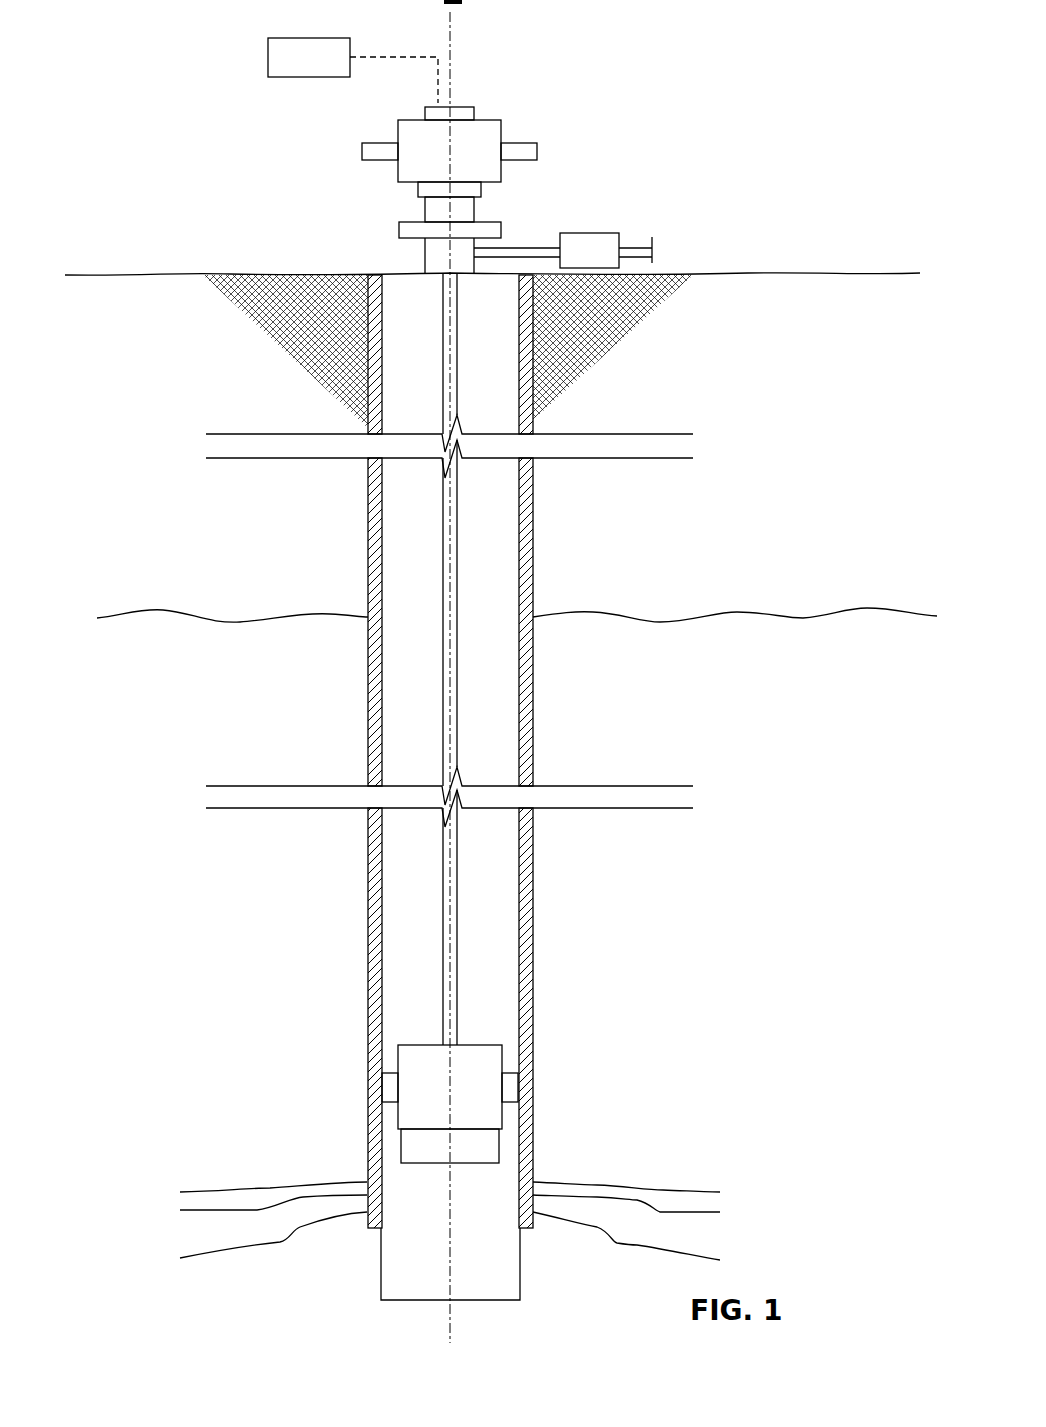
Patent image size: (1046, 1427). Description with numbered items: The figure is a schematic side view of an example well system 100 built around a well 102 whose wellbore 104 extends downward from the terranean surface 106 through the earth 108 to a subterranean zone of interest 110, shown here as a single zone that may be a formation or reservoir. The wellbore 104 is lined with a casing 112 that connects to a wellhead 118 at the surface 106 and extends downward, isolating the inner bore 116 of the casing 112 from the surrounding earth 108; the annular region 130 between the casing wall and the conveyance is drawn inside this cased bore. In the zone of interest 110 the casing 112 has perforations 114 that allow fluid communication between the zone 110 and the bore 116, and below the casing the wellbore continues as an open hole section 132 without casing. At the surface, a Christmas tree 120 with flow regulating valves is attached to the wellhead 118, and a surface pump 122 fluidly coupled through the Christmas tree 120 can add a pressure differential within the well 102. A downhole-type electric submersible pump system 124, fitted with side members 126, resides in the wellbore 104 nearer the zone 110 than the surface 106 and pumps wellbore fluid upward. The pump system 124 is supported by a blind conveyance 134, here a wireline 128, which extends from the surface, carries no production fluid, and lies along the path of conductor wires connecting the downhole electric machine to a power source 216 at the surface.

The well system 100 is at (688, 60).
The well 102 is at (610, 338).
The wellbore 104 is at (497, 480).
The terranean surface 106 is at (748, 273).
The earth 108 is at (820, 298).
The subterranean zone of interest 110 is at (702, 690).
The casing 112 is at (528, 528).
The perforations 114 is at (667, 1210).
The inner bore of the casing 116 is at (503, 560).
The wellhead 118 is at (405, 245).
The Christmas tree 120 is at (513, 125).
The surface pump 122 is at (613, 265).
The downhole-type electric submersible pump system 124 is at (492, 1042).
The anchor 126 is at (387, 1090).
The wireline 128 is at (443, 573).
The annular space 130 is at (493, 922).
The open hole section 132 is at (498, 1180).
The blind conveyance 134 is at (460, 843).
The power source 216 is at (333, 69).